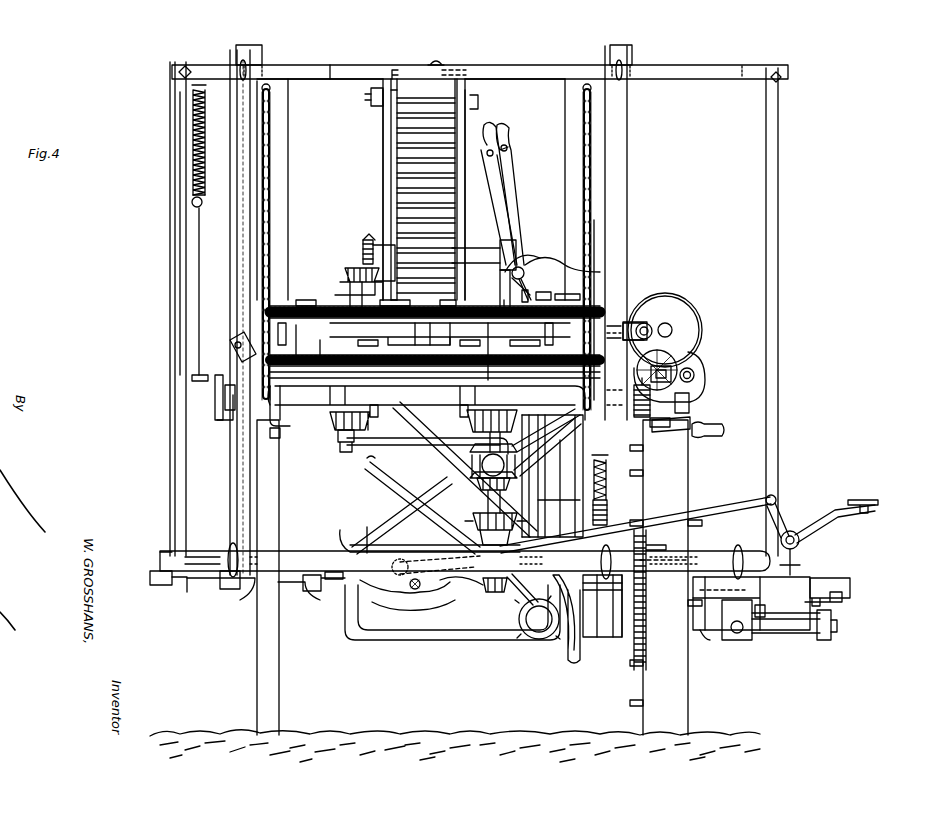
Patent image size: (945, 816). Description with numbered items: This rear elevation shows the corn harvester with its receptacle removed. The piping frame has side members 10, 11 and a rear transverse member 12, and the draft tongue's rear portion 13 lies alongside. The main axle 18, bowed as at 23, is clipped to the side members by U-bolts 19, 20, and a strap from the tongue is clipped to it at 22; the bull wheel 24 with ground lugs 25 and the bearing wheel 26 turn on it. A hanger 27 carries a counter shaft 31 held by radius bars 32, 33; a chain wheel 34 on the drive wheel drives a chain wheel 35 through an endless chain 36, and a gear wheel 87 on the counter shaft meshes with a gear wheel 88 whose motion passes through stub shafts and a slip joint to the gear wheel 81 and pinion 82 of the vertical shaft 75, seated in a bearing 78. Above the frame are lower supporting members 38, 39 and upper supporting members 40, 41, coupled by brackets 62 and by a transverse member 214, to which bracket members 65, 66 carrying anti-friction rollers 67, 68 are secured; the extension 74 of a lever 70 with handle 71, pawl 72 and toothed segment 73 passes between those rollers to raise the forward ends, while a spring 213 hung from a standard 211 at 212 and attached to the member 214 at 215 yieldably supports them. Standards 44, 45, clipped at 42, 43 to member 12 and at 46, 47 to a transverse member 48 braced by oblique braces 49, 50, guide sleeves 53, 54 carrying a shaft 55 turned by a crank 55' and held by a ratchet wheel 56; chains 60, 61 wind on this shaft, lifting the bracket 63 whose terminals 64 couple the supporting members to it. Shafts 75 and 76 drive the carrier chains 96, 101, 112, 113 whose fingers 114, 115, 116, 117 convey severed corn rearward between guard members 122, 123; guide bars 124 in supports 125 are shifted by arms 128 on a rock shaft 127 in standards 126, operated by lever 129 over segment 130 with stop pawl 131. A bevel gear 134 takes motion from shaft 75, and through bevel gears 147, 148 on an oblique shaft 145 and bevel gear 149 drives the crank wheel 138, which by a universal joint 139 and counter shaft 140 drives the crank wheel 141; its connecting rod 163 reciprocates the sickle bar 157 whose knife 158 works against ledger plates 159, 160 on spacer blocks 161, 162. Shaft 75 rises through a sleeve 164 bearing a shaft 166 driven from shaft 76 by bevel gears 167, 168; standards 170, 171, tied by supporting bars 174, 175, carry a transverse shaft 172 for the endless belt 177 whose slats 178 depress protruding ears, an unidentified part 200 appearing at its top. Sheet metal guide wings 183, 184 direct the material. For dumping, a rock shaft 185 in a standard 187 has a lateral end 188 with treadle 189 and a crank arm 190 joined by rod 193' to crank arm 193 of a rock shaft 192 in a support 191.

The side member 10 is at (756, 553).
The side member 11 is at (318, 330).
The rear transverse member 12 is at (296, 560).
The rear portion of draft tongue 13 is at (795, 586).
The main axle 18 is at (200, 590).
The U-bolt clip device 19 is at (172, 585).
The U-bolt clip device 20 is at (767, 608).
The clip connection 22 is at (843, 598).
The bowed portion of axle 23 is at (443, 640).
The main drive wheel 24 is at (688, 470).
The ground engaging lugs 25 is at (688, 497).
The bearing wheel 26 is at (279, 497).
The bracket device 27 is at (822, 640).
The counter shaft 31 is at (790, 633).
The radius bar 32 is at (737, 642).
The radius bar 33 is at (603, 640).
The chain wheel 34 is at (647, 540).
The chain wheel 35 is at (633, 665).
The endless chain 36 is at (628, 627).
The lower supporting member 38 is at (518, 378).
The lower supporting member 39 is at (318, 395).
The upper supporting member 40 is at (540, 370).
The upper supporting member 41 is at (304, 340).
The clip device 42 is at (600, 563).
The clip device 43 is at (230, 550).
The standard 44 is at (627, 236).
The standard 45 is at (232, 243).
The clip device 46 is at (240, 66).
The clip device 47 is at (625, 72).
The transverse member 48 is at (333, 66).
The oblique brace 49 is at (778, 250).
The oblique brace 50 is at (170, 240).
The sleeve 53 is at (642, 420).
The sleeve 54 is at (217, 410).
The shaft 55 is at (464, 401).
The operating crank 55' is at (707, 415).
The ratchet wheel 56 is at (662, 428).
The chain 60 is at (592, 184).
The chain 61 is at (272, 190).
The bracket devices 62 is at (423, 339).
The bracket device 63 is at (340, 435).
The depending terminals 64 is at (582, 413).
The bracket member 65 is at (539, 478).
The bracket member 66 is at (545, 487).
The anti-friction roller 67 is at (540, 505).
The anti-friction roller 68 is at (520, 557).
The lever 70 is at (553, 476).
The handle 71 is at (596, 250).
The pawl device 72 is at (602, 483).
The toothed segment 73 is at (600, 512).
The lever extension 74 is at (566, 528).
The vertical shaft 75 is at (497, 290).
The vertical shaft 76 is at (348, 292).
The bearing 78 is at (478, 590).
The gear wheel 81 is at (475, 522).
The gear pinion 82 is at (484, 488).
The gear wheel 87 is at (570, 664).
The gear wheel 88 is at (519, 619).
The endless chain 96 is at (478, 368).
The endless chain 101 is at (323, 365).
The endless chain 112 is at (568, 305).
The endless chain 113 is at (318, 302).
The carrying fingers 114 is at (578, 367).
The carrier fingers 115 is at (268, 347).
The carrier fingers 116 is at (598, 330).
The carrier fingers 117 is at (434, 305).
The guard member 122 is at (398, 318).
The guard member 123 is at (473, 296).
The guide bars 124 is at (546, 300).
The supports 125 is at (530, 290).
The standards 126 is at (538, 240).
The rock shaft 127 is at (520, 265).
The arm 128 is at (514, 289).
The operating lever 129 is at (508, 200).
The toothed segment 130 is at (516, 230).
The stop pawl 131 is at (497, 205).
The bevel gear 134 is at (482, 462).
The crank wheel 138 is at (680, 365).
The universal joint 139 is at (690, 372).
The counter shaft 140 is at (672, 328).
The crank wheel 141 is at (688, 296).
The oblique shaft 145 is at (548, 447).
The bevel gear 147 is at (531, 468).
The bevel gear 148 is at (646, 339).
The bevel gear 149 is at (696, 378).
The sickle bar 157 is at (371, 348).
The sickle knife 158 is at (424, 331).
The ledger plate 159 is at (398, 349).
The ledger plate 160 is at (467, 349).
The spacer block 161 is at (450, 331).
The spacer block 162 is at (454, 331).
The connecting rod 163 is at (603, 333).
The sleeve 164 is at (495, 244).
The shaft 166 is at (360, 250).
The bevel gear 167 is at (342, 270).
The bevel gear 168 is at (368, 236).
The standard 170 is at (468, 130).
The standard 171 is at (385, 150).
The transverse shaft 172 is at (368, 96).
The supporting bar 174 is at (460, 80).
The supporting bar 175 is at (397, 70).
The endless belt 177 is at (405, 115).
The slats 178 is at (410, 124).
The guide wing 183 is at (310, 86).
The guide wing 184 is at (540, 91).
The rock shaft 185 is at (795, 532).
The standard 187 is at (800, 548).
The lateral end of rock shaft 188 is at (835, 512).
The treadle member 189 is at (880, 502).
The crank arm 190 is at (778, 500).
The support 191 is at (444, 594).
The rock shaft 192 is at (413, 590).
The crank arm 193 is at (388, 585).
The rod 193' is at (638, 519).
The cap 200 is at (437, 62).
The standard 211 is at (170, 284).
The spring connection 212 is at (205, 92).
The spring 213 is at (204, 178).
The transverse member 214 is at (232, 372).
The spring attachment point 215 is at (190, 378).